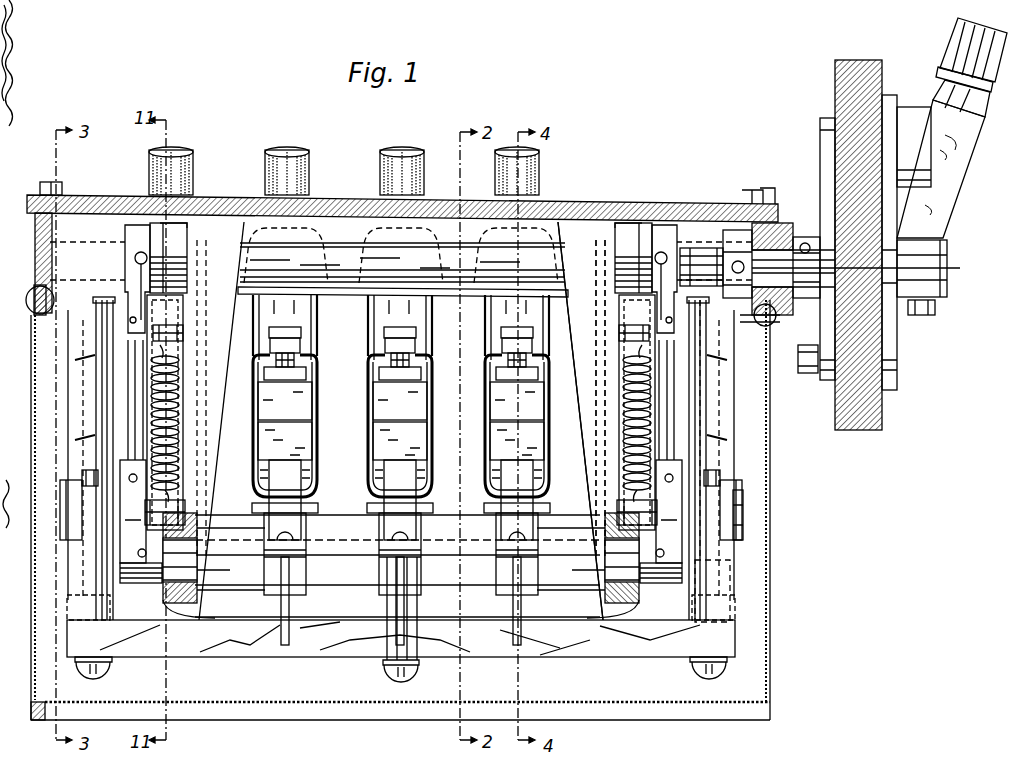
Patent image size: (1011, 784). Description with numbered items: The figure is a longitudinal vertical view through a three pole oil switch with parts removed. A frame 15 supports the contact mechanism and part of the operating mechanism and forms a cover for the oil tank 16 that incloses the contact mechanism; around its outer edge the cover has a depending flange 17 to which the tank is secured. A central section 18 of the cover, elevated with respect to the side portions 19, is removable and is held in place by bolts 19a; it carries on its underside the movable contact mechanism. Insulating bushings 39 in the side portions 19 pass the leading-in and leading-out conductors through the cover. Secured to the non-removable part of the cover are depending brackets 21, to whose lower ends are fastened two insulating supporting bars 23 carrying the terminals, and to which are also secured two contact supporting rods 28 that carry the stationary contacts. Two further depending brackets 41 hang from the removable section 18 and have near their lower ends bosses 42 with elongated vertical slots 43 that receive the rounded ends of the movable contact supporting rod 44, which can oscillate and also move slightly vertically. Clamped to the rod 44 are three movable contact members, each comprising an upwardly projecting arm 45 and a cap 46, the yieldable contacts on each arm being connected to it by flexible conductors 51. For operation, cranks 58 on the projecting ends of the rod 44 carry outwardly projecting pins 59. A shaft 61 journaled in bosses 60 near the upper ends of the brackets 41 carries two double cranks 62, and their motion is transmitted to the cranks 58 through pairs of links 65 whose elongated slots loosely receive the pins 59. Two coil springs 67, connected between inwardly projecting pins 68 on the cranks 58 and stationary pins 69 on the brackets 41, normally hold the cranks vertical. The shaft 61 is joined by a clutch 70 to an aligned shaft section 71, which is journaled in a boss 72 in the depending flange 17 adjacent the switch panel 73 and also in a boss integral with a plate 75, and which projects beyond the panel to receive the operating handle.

The frame 15 is at (801, 240).
The oil tank 16 is at (771, 500).
The depending flange 17 is at (34, 310).
The central section 18 is at (40, 196).
The side portions 19 is at (36, 276).
The bolts 19a is at (58, 186).
The depending brackets 21 is at (730, 588).
The insulating supporting bars 23 is at (628, 658).
The contact supporting rods 28 is at (738, 514).
The insulating bushings 39 is at (322, 310).
The depending brackets 41 is at (218, 430).
The bosses 42 is at (166, 604).
The elongated vertical slots 43 is at (198, 575).
The movable contact supporting rod 44 is at (309, 579).
The upwardly projecting arm 45 is at (484, 512).
The cap 46 is at (538, 572).
The flexible conductors 51 is at (553, 375).
The cranks 58 is at (140, 585).
The pins 59 is at (82, 476).
The bosses 60 is at (168, 228).
The shaft 61 is at (124, 268).
The double cranks 62 is at (128, 238).
The links 65 is at (104, 380).
The coil springs 67 is at (182, 386).
The inwardly projecting pins 68 is at (184, 508).
The stationary pins 69 is at (172, 327).
The clutch 70 is at (706, 252).
The shaft section 71 is at (772, 240).
The boss 72 is at (780, 305).
The switch panel 73 is at (872, 428).
The plate 75 is at (822, 145).